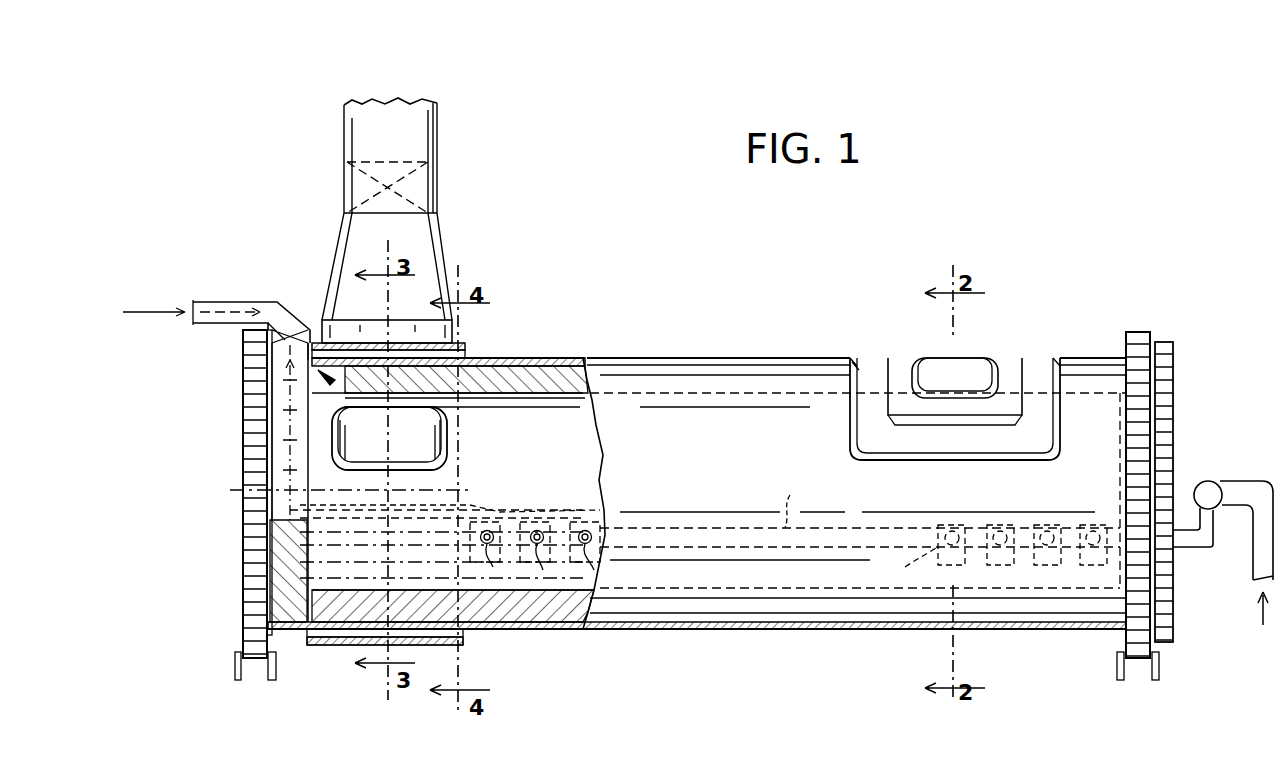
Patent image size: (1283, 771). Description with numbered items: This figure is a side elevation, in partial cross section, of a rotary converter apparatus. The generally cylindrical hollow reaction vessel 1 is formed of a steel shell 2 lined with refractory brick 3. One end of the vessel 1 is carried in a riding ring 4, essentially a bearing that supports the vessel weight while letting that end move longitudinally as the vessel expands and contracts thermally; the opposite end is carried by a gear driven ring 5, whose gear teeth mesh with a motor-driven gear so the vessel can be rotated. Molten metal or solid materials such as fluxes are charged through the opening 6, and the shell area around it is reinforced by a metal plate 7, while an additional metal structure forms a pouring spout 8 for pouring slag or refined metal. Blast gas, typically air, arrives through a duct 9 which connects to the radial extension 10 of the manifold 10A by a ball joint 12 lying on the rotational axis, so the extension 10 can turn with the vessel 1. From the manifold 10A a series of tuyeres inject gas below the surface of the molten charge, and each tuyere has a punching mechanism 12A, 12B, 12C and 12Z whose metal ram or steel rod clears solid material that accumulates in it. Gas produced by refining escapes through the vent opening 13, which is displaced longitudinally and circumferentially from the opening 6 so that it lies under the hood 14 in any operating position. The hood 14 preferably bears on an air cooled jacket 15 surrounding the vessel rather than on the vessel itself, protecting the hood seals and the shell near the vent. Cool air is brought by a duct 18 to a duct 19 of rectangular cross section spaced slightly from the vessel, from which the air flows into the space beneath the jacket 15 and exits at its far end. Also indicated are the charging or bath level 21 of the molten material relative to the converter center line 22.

The reaction vessel 1 is at (716, 358).
The steel shell 2 is at (548, 357).
The refractory brick 3 is at (590, 362).
The riding ring 4 is at (1137, 333).
The gear driven ring 5 is at (255, 535).
The opening 6 is at (967, 368).
The metal plate 7 is at (1056, 365).
The pouring spout 8 is at (1006, 357).
The duct 9 is at (1255, 568).
The radial extension 10 is at (1216, 535).
The manifold 10A is at (810, 502).
The ball joint 12 is at (1221, 479).
The mechanism 12A is at (488, 512).
The mechanism 12B is at (540, 518).
The mechanism 12C is at (598, 512).
The mechanism 12Z is at (958, 524).
The vent opening 13 is at (432, 428).
The hood 14 is at (445, 211).
The air cooled jacket 15 is at (479, 352).
The duct 18 is at (232, 300).
The duct 19 is at (280, 435).
The bath level 21 is at (382, 503).
The converter center line 22 is at (445, 497).